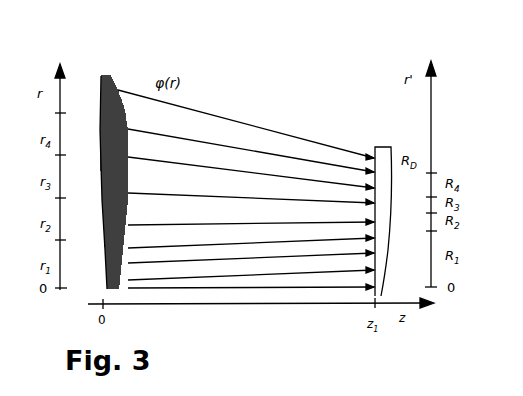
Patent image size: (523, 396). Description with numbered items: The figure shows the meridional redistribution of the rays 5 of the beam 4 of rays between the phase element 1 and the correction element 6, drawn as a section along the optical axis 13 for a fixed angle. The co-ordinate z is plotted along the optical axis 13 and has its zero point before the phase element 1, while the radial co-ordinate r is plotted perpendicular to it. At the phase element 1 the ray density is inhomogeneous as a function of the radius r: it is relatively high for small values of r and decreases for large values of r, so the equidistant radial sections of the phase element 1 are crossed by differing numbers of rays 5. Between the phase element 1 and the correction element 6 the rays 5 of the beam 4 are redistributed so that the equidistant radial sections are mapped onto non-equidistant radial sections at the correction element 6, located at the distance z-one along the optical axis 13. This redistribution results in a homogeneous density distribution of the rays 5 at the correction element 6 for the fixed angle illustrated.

The phase element 1 is at (118, 92).
The beam of rays 4 is at (236, 86).
The rays 5 is at (258, 152).
The correction element 6 is at (382, 147).
The optical axis 13 is at (219, 289).